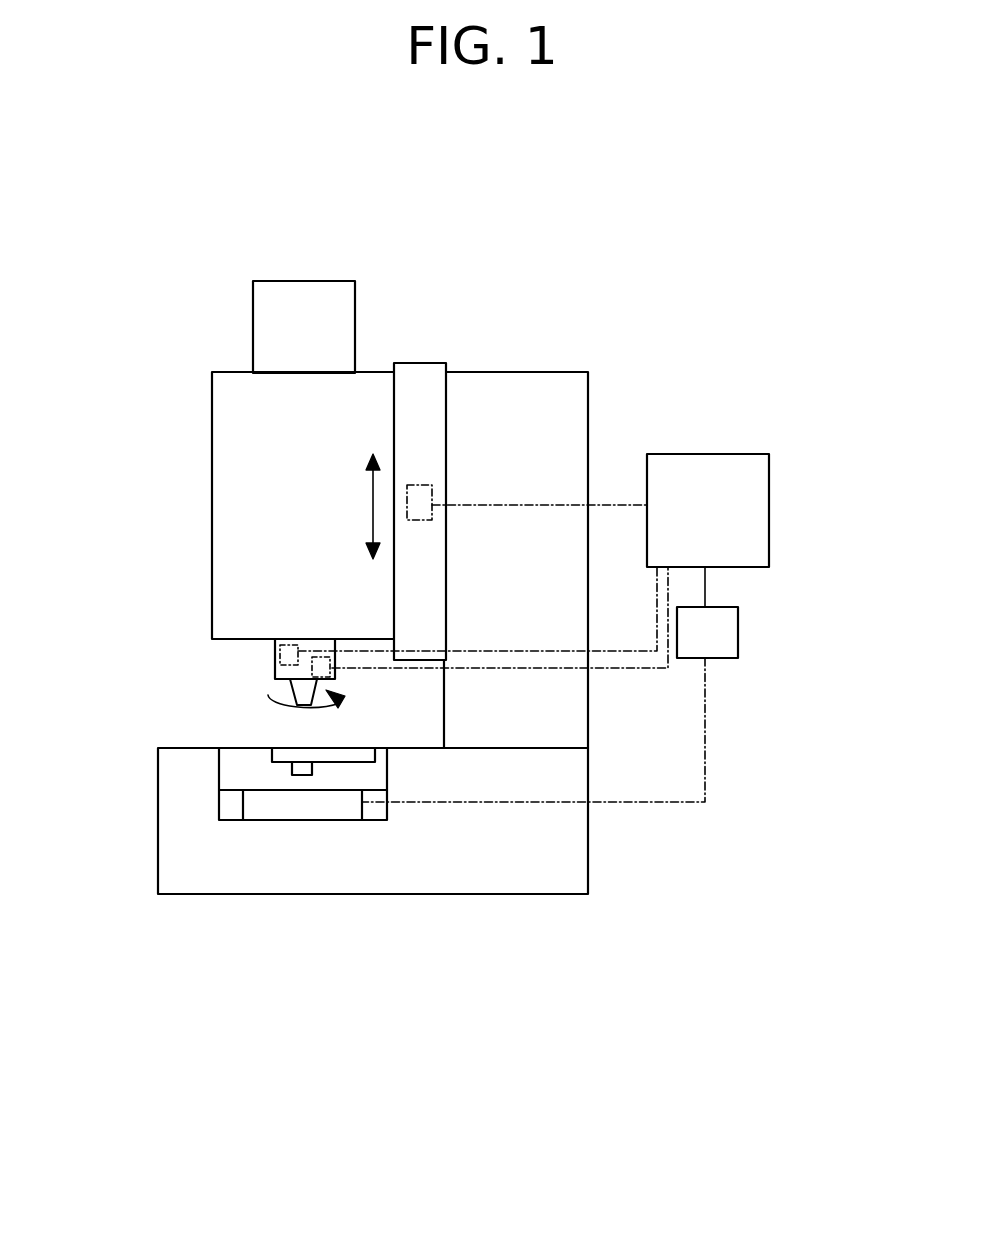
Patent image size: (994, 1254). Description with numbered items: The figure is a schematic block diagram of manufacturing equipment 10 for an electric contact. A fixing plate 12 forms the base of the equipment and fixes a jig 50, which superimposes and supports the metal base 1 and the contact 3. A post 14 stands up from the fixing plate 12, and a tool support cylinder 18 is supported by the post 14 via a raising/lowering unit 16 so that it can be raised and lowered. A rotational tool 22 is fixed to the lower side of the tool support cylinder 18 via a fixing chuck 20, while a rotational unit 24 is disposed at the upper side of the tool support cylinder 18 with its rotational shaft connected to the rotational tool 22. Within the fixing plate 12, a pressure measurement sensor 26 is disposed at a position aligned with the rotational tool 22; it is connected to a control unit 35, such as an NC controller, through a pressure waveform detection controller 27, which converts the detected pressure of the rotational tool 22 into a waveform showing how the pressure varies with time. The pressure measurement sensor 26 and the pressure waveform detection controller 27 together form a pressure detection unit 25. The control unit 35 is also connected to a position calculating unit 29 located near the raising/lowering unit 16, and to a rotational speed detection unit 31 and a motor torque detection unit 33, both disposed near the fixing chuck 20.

The metal base 1 is at (273, 757).
The contact 3 is at (293, 770).
The manufacturing equipment 10 is at (597, 357).
The fixing plate 12 is at (347, 894).
The post 14 is at (588, 447).
The raising/lowering unit 16 is at (425, 363).
The tool support cylinder 18 is at (212, 457).
The fixing chuck 20 is at (275, 657).
The rotational tool 22 is at (290, 692).
The rotational unit 24 is at (253, 322).
The pressure detection unit 25 is at (845, 718).
The pressure measurement sensor 26 is at (298, 803).
The pressure waveform detection controller 27 is at (729, 658).
The position calculating unit 29 is at (432, 485).
The rotational speed detection unit 31 is at (289, 645).
The motor torque detection unit 33 is at (320, 657).
The control unit 35 is at (769, 518).
The jig 50 is at (228, 800).